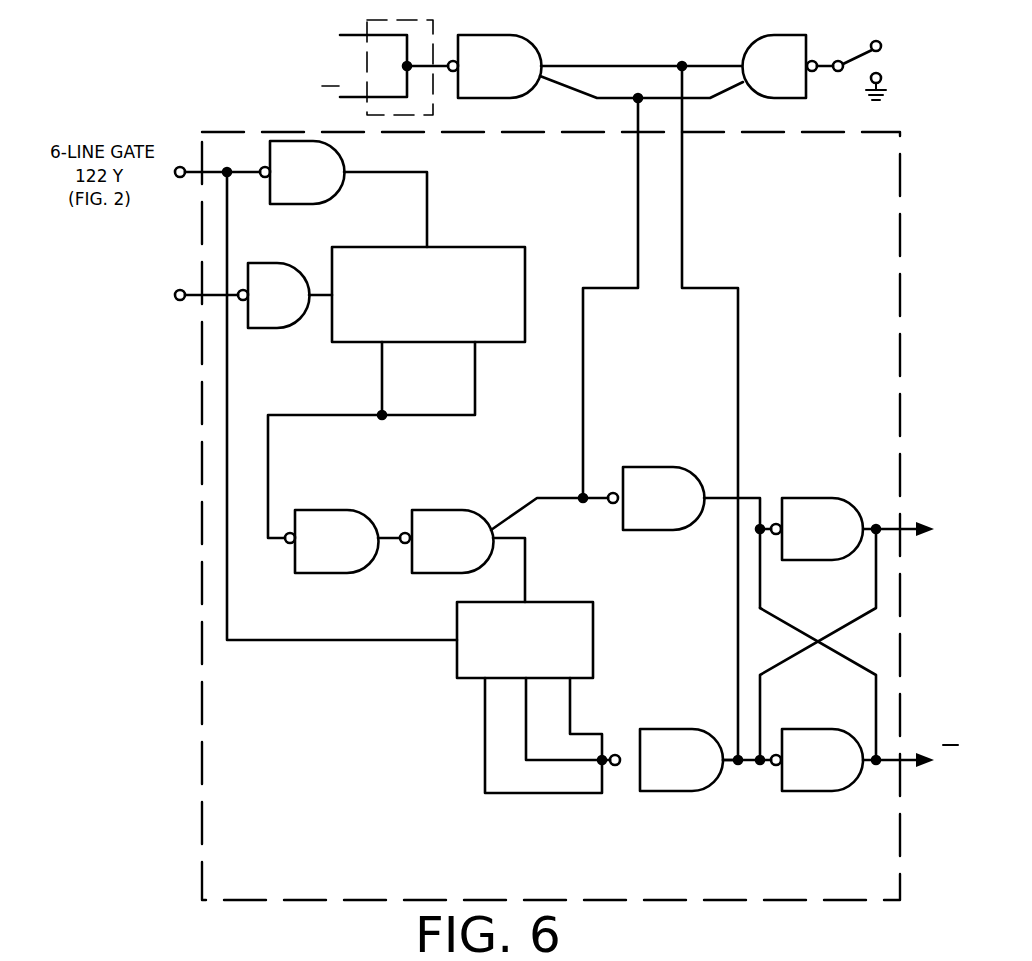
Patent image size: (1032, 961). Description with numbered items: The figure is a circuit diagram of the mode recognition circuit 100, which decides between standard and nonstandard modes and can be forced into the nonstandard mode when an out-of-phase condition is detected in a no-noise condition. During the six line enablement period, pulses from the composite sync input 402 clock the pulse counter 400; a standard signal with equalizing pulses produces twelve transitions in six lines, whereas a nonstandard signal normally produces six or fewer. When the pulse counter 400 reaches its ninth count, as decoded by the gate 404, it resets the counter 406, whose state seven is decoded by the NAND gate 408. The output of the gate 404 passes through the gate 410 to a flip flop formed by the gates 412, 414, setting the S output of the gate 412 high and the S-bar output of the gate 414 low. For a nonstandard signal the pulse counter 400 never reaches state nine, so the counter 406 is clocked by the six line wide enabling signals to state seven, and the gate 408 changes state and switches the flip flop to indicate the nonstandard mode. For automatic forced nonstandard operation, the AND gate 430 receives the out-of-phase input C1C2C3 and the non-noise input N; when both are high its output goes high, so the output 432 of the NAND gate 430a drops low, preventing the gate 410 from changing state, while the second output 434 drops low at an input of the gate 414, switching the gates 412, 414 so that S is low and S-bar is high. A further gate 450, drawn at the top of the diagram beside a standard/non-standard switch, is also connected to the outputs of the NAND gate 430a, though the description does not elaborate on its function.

The mode recognition circuit 100 is at (198, 632).
The pulse counter 400 is at (494, 247).
The composite sync input 402 is at (188, 300).
The gate 404 is at (358, 528).
The counter 406 is at (593, 632).
The NAND gate 408 is at (726, 742).
The gate 410 is at (662, 467).
The gate 412 is at (815, 510).
The gate 414 is at (824, 740).
The AND gate 430 is at (362, 62).
The NAND gate 430a is at (528, 52).
The output 432 is at (591, 98).
The second output 434 is at (682, 62).
The NAND gate with standard/non-standard switch 450 is at (757, 90).